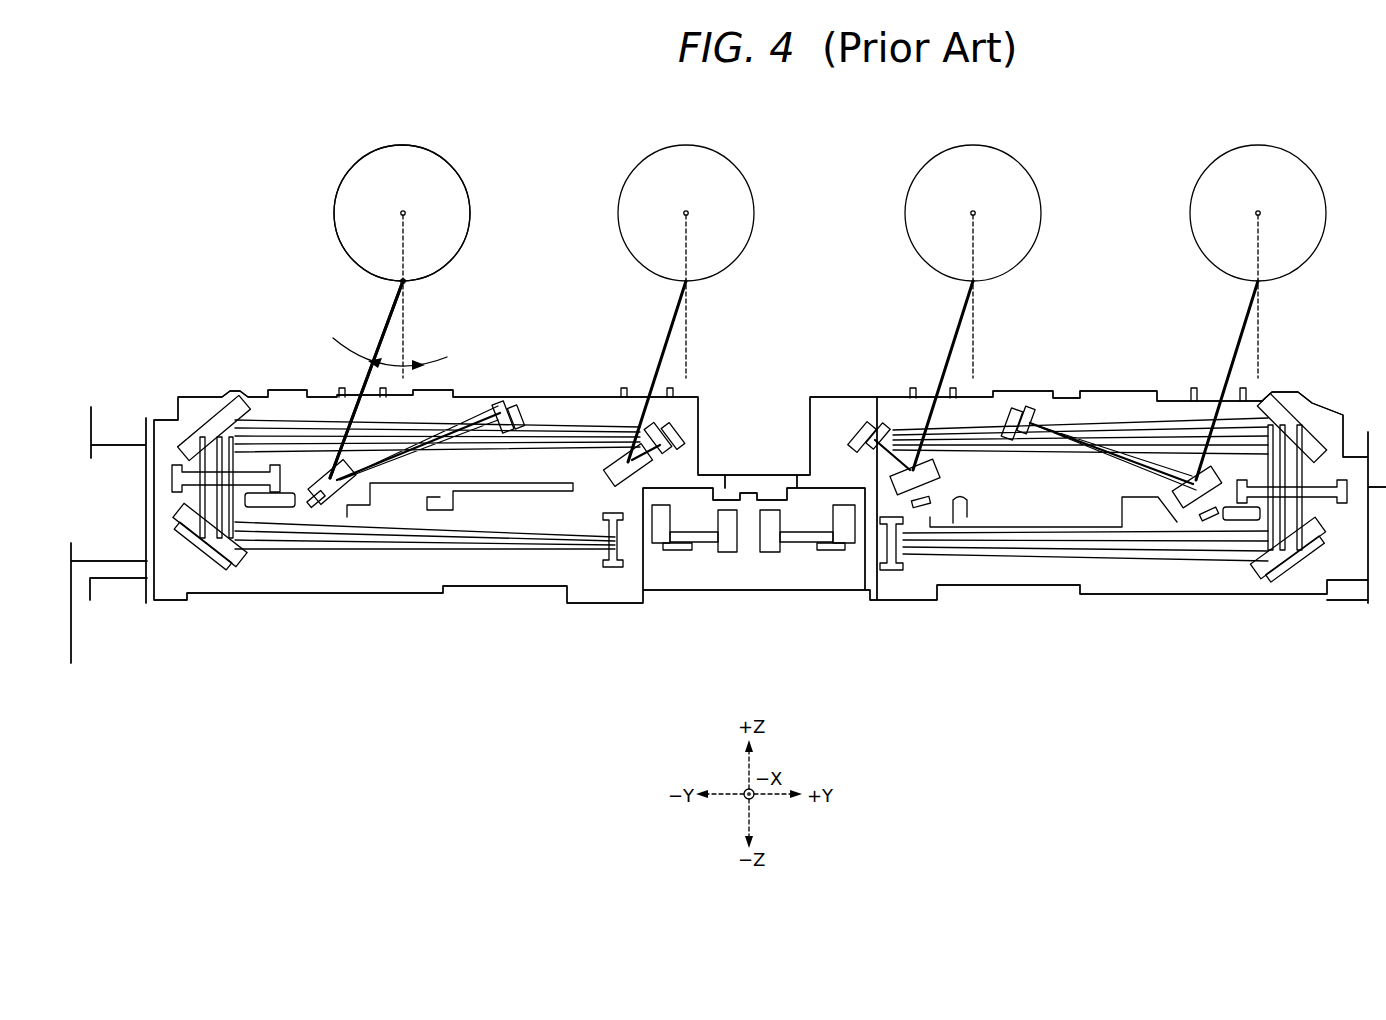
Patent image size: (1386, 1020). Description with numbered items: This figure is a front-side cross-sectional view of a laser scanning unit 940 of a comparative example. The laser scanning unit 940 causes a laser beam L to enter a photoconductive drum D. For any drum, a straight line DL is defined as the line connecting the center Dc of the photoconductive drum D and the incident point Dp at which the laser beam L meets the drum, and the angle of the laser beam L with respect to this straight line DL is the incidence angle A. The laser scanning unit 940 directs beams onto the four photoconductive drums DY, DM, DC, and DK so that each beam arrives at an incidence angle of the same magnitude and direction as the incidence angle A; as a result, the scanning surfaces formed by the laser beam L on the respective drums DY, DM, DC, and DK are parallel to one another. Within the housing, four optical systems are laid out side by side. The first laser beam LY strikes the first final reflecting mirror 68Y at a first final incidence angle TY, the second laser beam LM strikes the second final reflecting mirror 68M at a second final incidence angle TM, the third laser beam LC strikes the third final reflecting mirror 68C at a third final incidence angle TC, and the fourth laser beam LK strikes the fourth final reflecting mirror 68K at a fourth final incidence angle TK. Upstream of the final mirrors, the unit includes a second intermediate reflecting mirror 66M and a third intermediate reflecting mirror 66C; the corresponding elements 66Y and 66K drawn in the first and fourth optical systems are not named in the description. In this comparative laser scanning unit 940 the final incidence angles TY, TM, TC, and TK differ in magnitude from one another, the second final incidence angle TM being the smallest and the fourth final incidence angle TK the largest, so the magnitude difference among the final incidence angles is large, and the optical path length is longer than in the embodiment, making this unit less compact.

The laser scanning unit 940 is at (214, 608).
The photoconductive drum D is at (402, 188).
The photoconductive drum DY is at (402, 165).
The photoconductive drum DM is at (686, 165).
The photoconductive drum DC is at (973, 165).
The photoconductive drum DK is at (1258, 165).
The center of the photoconductive drum Dc is at (402, 211).
The incident point Dp is at (406, 286).
The straight line DL is at (406, 324).
The laser beam L is at (349, 376).
The first laser beam LY is at (384, 317).
The second laser beam LM is at (668, 318).
The third laser beam LC is at (957, 320).
The fourth laser beam LK is at (1230, 318).
The incidence angle A is at (390, 356).
The first final incidence angle TY is at (437, 453).
The second final incidence angle TM is at (695, 415).
The third final incidence angle TC is at (890, 440).
The fourth final incidence angle TK is at (1127, 476).
The lens (yellow) 66Y is at (513, 400).
The second intermediate reflecting mirror 66M is at (680, 449).
The third intermediate reflecting mirror 66C is at (852, 447).
The lens (black) 66K is at (1018, 400).
The first final reflecting mirror 68Y is at (337, 500).
The second final reflecting mirror 68M is at (627, 470).
The third final reflecting mirror 68C is at (920, 482).
The fourth final reflecting mirror 68K is at (1200, 497).